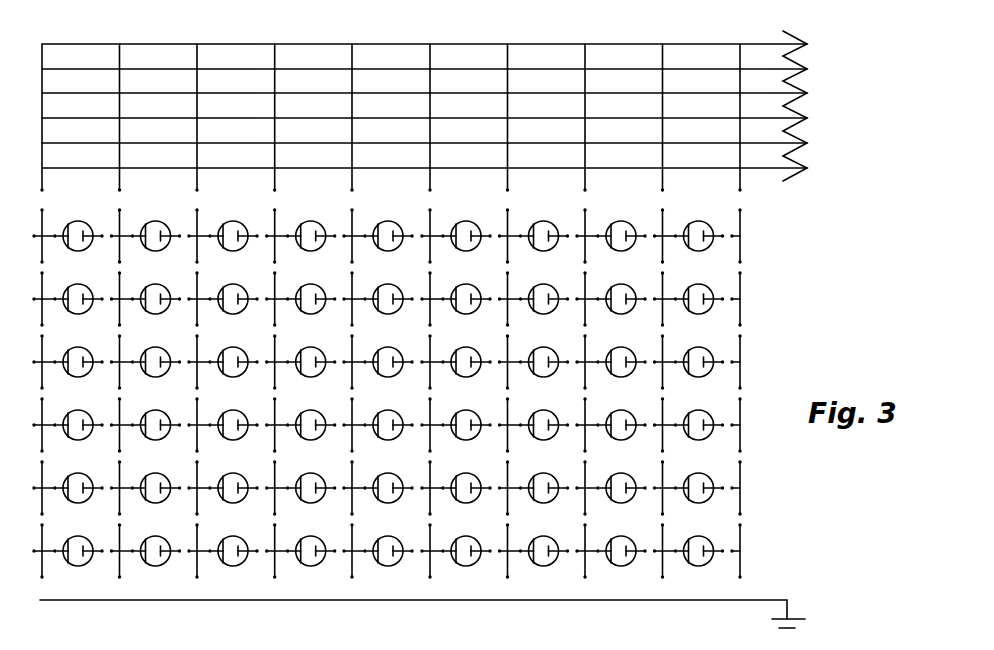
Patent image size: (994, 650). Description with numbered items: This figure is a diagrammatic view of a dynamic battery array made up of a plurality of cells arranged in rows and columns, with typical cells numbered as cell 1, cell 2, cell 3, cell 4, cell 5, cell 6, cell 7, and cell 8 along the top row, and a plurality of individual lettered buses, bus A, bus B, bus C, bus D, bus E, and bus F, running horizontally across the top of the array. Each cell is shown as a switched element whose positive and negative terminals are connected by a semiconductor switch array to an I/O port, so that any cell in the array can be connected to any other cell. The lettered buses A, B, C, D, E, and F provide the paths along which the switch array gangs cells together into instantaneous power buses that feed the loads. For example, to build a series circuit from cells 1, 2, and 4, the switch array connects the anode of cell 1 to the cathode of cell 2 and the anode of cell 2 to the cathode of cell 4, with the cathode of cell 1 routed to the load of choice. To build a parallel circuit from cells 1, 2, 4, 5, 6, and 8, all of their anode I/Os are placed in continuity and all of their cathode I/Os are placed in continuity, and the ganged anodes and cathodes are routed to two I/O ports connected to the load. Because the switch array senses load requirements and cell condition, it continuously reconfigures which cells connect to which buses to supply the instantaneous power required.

The cell 1 is at (67, 388).
The cell 2 is at (145, 388).
The cell 3 is at (222, 388).
The cell 4 is at (300, 388).
The cell 5 is at (377, 388).
The cell 6 is at (455, 388).
The cell 7 is at (533, 388).
The cell 8 is at (610, 388).
The bus A is at (433, 44).
The bus B is at (433, 69).
The bus C is at (433, 93).
The bus D is at (434, 118).
The bus E is at (433, 143).
The bus F is at (432, 168).